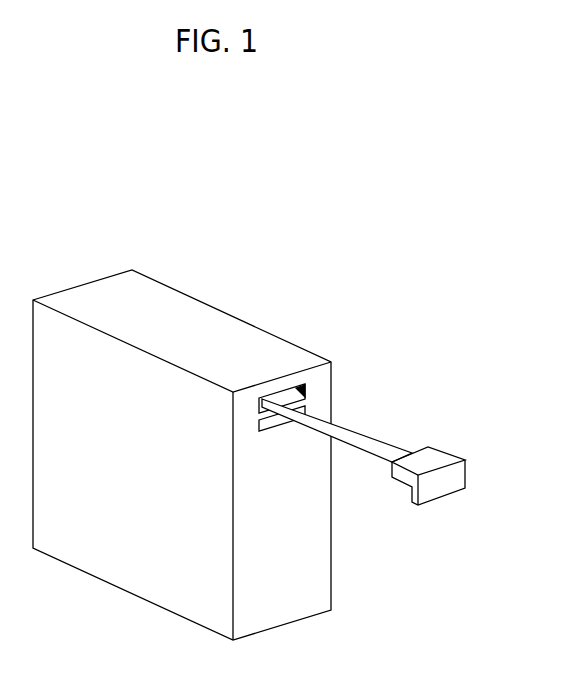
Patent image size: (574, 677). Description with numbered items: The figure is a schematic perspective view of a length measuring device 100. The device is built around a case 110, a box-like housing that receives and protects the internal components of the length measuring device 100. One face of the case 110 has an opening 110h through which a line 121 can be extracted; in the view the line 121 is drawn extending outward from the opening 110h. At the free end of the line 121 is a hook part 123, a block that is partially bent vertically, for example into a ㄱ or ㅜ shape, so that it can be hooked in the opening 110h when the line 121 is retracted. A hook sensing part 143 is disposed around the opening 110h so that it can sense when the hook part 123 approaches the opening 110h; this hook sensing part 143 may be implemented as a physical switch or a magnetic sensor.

The length measuring device 100 is at (309, 290).
The case 110 is at (195, 313).
The opening 110h is at (304, 396).
The line 121 is at (383, 447).
The hook part 123 is at (438, 458).
The hook sensing part 143 is at (282, 422).